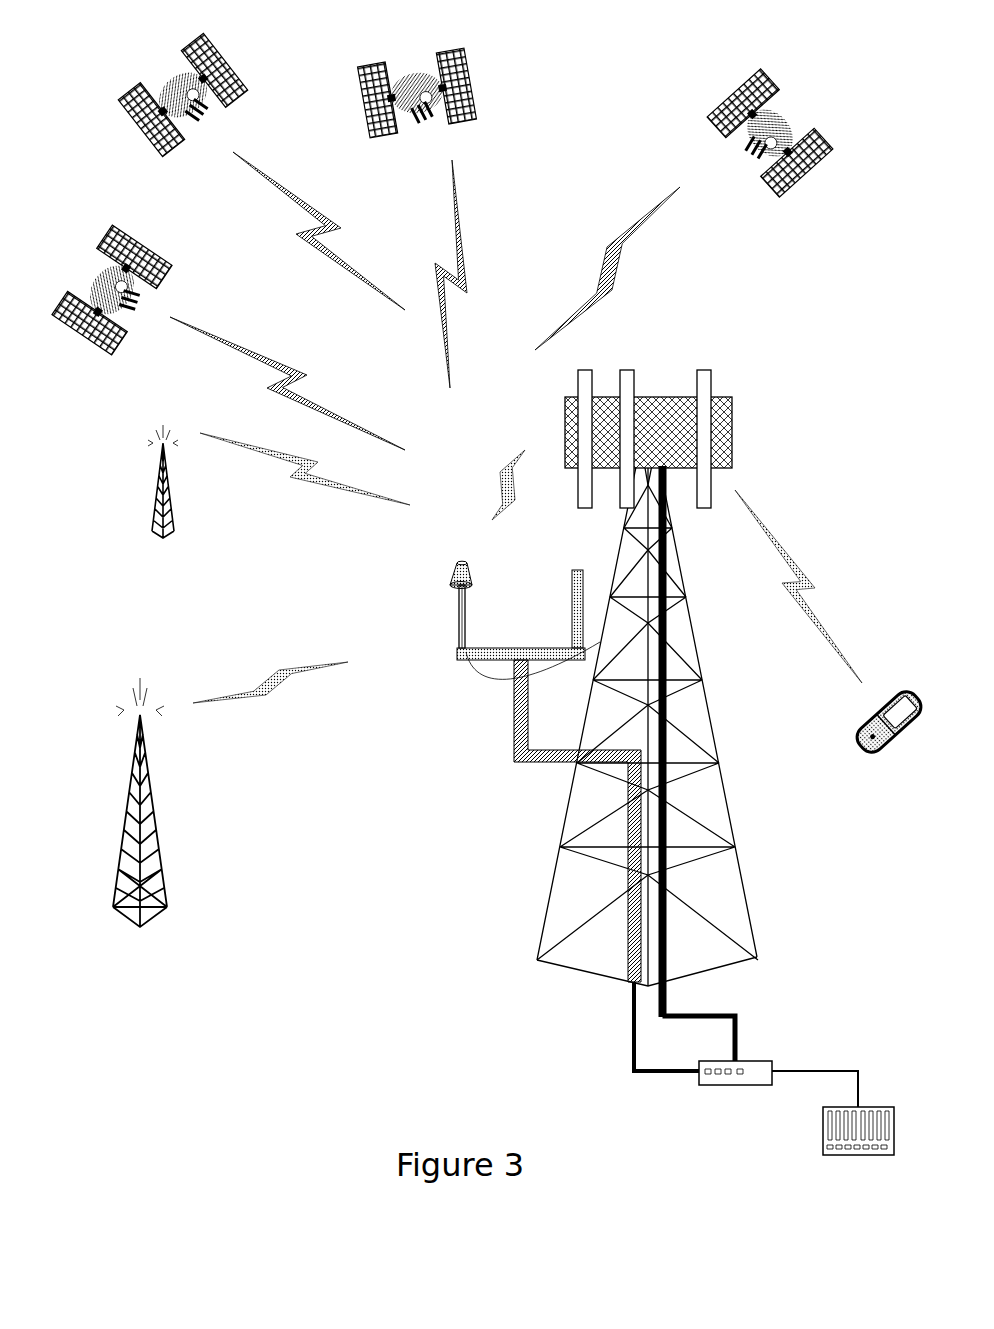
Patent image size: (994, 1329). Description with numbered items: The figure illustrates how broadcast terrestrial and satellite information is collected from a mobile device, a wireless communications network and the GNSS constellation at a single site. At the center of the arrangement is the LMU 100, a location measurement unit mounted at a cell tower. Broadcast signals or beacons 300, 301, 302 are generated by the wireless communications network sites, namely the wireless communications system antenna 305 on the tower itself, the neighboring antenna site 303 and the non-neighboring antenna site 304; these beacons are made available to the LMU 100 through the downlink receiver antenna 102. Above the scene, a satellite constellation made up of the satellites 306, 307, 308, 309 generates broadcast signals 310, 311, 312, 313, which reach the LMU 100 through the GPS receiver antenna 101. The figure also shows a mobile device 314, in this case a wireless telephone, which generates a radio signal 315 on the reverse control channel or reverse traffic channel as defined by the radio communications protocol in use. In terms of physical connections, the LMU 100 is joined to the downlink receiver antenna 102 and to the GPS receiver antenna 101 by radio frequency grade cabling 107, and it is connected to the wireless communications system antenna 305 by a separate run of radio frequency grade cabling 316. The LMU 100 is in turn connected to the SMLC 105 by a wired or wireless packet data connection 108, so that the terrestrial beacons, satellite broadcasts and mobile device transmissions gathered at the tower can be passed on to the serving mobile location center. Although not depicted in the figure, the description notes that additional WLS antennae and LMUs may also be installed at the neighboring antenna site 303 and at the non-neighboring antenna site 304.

The LMU 100 is at (735, 1102).
The GPS receiver antenna 101 is at (438, 604).
The downlink receiver antenna 102 is at (549, 776).
The SMLC 105 is at (858, 1162).
The radio frequency grade cabling 107 is at (640, 1026).
The packet data connection 108 is at (815, 1076).
The broadcast signal or beacon 300 is at (519, 489).
The broadcast signal or beacon 301 is at (270, 696).
The broadcast signal or beacon 302 is at (305, 473).
The neighboring antenna site 303 is at (140, 844).
The non-neighboring antenna site 304 is at (163, 521).
The wireless communications system antenna 305 is at (648, 427).
The satellite 306 is at (102, 290).
The satellite 307 is at (182, 94).
The satellite 308 is at (417, 82).
The satellite 309 is at (770, 121).
The broadcast signal 310 is at (607, 268).
The broadcast signal 311 is at (437, 274).
The broadcast signal 312 is at (319, 231).
The broadcast signal 313 is at (287, 383).
The mobile device 314 is at (889, 737).
The radio signal 315 is at (798, 586).
The radio frequency grade cabling 316 is at (699, 763).